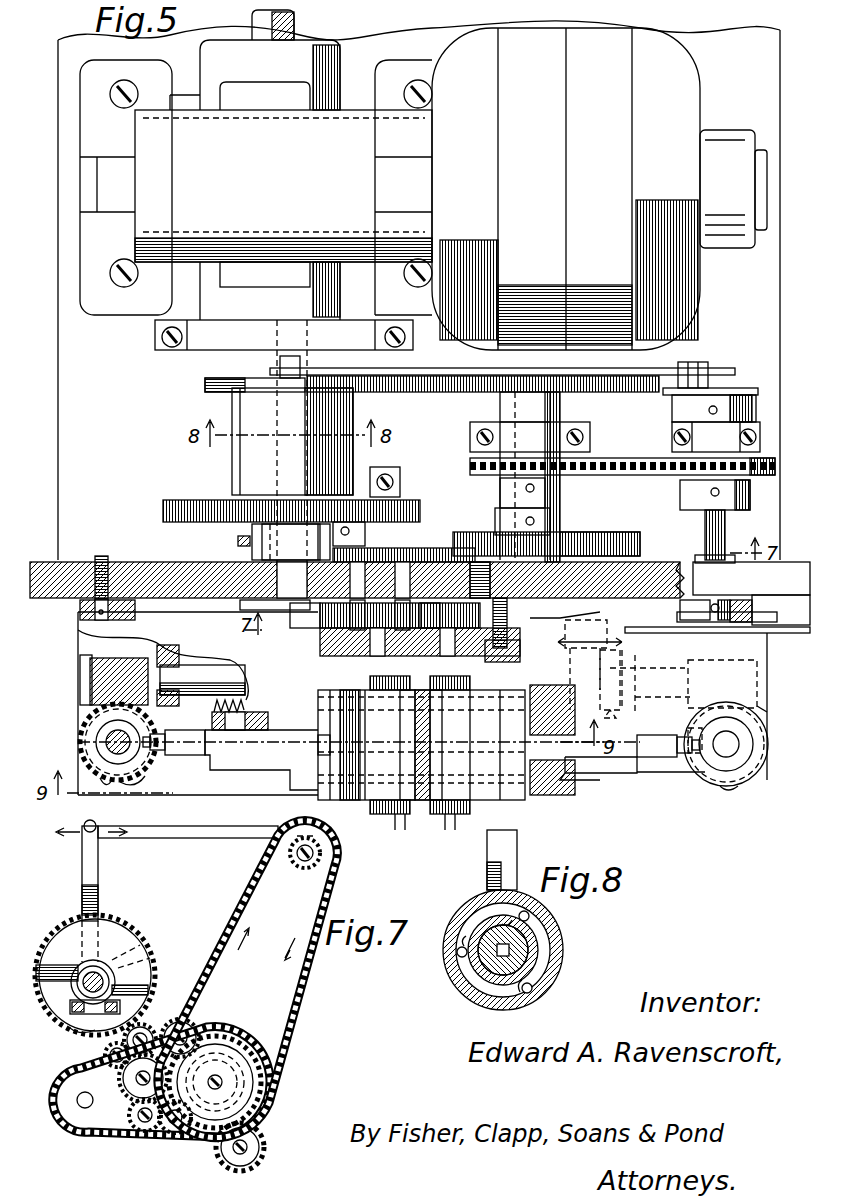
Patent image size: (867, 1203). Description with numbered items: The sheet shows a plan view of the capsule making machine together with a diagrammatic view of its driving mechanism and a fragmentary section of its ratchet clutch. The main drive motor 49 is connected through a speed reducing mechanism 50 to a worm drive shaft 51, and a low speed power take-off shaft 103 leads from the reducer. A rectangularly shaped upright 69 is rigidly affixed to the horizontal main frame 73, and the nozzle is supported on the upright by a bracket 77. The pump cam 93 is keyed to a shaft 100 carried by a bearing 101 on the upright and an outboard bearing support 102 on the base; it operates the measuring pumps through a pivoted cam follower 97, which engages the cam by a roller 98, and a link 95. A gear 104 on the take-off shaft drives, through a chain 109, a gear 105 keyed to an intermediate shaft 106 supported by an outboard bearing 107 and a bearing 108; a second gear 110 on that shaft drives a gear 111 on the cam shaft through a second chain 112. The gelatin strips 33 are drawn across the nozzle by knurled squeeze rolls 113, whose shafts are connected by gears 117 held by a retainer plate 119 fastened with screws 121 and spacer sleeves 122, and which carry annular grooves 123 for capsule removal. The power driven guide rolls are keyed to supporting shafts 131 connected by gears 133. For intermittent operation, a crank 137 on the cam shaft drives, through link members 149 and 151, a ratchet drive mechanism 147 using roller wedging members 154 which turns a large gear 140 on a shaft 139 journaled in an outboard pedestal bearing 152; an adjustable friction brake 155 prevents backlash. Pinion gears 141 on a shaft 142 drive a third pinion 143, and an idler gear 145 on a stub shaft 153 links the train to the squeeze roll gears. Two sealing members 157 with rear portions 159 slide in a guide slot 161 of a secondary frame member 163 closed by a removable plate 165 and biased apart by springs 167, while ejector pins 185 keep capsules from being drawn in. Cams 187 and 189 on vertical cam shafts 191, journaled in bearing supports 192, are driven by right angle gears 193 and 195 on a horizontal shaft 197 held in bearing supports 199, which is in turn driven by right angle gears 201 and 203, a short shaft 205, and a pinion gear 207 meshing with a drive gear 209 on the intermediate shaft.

In FIG. 5, the gelatin strips 33 is at (433, 825).
In FIG. 5, the main drive motor 49 is at (524, 45).
In FIG. 5, the speed reducing mechanism 50 is at (300, 182).
In FIG. 5, the worm drive shaft 51 is at (297, 28).
In FIG. 5, the upright 69 is at (147, 562).
In FIG. 5, the main frame 73 is at (58, 382).
In FIG. 5, the bracket 77 is at (436, 722).
In FIG. 5, the pump cam 93 is at (684, 614).
In FIG. 5, the link 95 is at (678, 634).
In FIG. 5, the cam follower 97 is at (790, 607).
In FIG. 5, the roller 98 is at (760, 596).
In FIG. 5, the pump cam shaft 100 is at (723, 531).
In FIG. 7, the pump cam shaft 100 is at (322, 853).
In FIG. 5, the bearing 101 is at (700, 562).
In FIG. 5, the outboard bearing support 102 is at (760, 436).
In FIG. 5, the power take-off shaft 103 is at (272, 364).
In FIG. 7, the power take-off shaft 103 is at (76, 1106).
In FIG. 5, the gear 104 is at (216, 380).
In FIG. 7, the gear 104 is at (58, 1101).
In FIG. 5, the gear 105 is at (426, 394).
In FIG. 7, the gear 105 is at (261, 1064).
In FIG. 5, the intermediate shaft 106 is at (500, 409).
In FIG. 7, the intermediate shaft 106 is at (222, 1086).
In FIG. 5, the outboard bearing 107 is at (470, 439).
In FIG. 5, the bearing 108 is at (565, 607).
In FIG. 5, the chain 109 is at (440, 392).
In FIG. 7, the chain 109 is at (175, 1136).
In FIG. 5, the second gear 110 is at (496, 473).
In FIG. 7, the second gear 110 is at (260, 1056).
In FIG. 5, the gear 111 is at (776, 470).
In FIG. 7, the gear 111 is at (300, 882).
In FIG. 5, the second chain 112 is at (623, 472).
In FIG. 7, the second chain 112 is at (230, 993).
In FIG. 5, the squeeze rolls 113 is at (370, 685).
In FIG. 5, the gears 117 is at (434, 615).
In FIG. 7, the gears 117 is at (150, 1135).
In FIG. 5, the retainer plate 119 is at (322, 648).
In FIG. 5, the screws 121 is at (502, 657).
In FIG. 5, the spacer sleeves 122 is at (514, 623).
In FIG. 5, the annular grooves 123 is at (400, 725).
In FIG. 5, the supporting shafts 131 is at (362, 662).
In FIG. 7, the supporting shafts 131 is at (140, 1026).
In FIG. 5, the gears 133 is at (440, 556).
In FIG. 7, the gears 133 is at (158, 1019).
In FIG. 5, the crank 137 is at (708, 380).
In FIG. 7, the crank 137 is at (325, 838).
In FIG. 5, the rotatable shaft 139 is at (284, 358).
In FIG. 7, the rotatable shaft 139 is at (80, 975).
In FIG. 8, the rotatable shaft 139 is at (555, 940).
In FIG. 5, the large gear 140 is at (182, 523).
In FIG. 7, the large gear 140 is at (126, 922).
In FIG. 5, the pinion gears 141 is at (366, 536).
In FIG. 7, the pinion gears 141 is at (98, 1058).
In FIG. 5, the rotatable shaft 142 is at (307, 599).
In FIG. 7, the rotatable shaft 142 is at (108, 1059).
In FIG. 5, the third pinion 143 is at (406, 579).
In FIG. 7, the third pinion 143 is at (134, 1034).
In FIG. 5, the idler gear 145 is at (262, 602).
In FIG. 7, the idler gear 145 is at (121, 1084).
In FIG. 5, the ratchet drive mechanism 147 is at (236, 492).
In FIG. 7, the ratchet drive mechanism 147 is at (136, 962).
In FIG. 8, the ratchet drive mechanism 147 is at (604, 973).
In FIG. 5, the link member 149 is at (284, 399).
In FIG. 7, the link member 149 is at (99, 872).
In FIG. 8, the link member 149 is at (487, 865).
In FIG. 5, the link member 151 is at (466, 372).
In FIG. 5, the outboard pedestal bearing 152 is at (325, 314).
In FIG. 7, the stub shaft 153 is at (88, 1106).
In FIG. 8, the roller wedging members 154 is at (542, 910).
In FIG. 5, the adjustable friction brake 155 is at (266, 536).
In FIG. 7, the adjustable friction brake 155 is at (120, 974).
In FIG. 5, the sealing members 157 is at (331, 800).
In FIG. 5, the rear portion 159 is at (190, 760).
In FIG. 5, the guide slot 161 is at (584, 797).
In FIG. 5, the secondary frame member 163 is at (86, 624).
In FIG. 5, the removable plate 165 is at (237, 771).
In FIG. 5, the springs 167 is at (233, 704).
In FIG. 5, the ejector pin 185 is at (308, 795).
In FIG. 5, the cams 187 is at (80, 750).
In FIG. 5, the cams 189 is at (108, 778).
In FIG. 5, the vertical cam shafts 191 is at (106, 737).
In FIG. 5, the bearing supports 192 is at (78, 683).
In FIG. 5, the right angle gear 193 is at (142, 772).
In FIG. 5, the right angle gear 195 is at (90, 658).
In FIG. 5, the horizontal shaft 197 is at (205, 670).
In FIG. 5, the bearing supports 199 is at (172, 646).
In FIG. 5, the right angle gear 201 is at (614, 677).
In FIG. 5, the right angle gear 203 is at (592, 650).
In FIG. 5, the short shaft 205 is at (596, 580).
In FIG. 7, the short shaft 205 is at (248, 1142).
In FIG. 5, the pinion gear 207 is at (633, 535).
In FIG. 7, the pinion gear 207 is at (262, 1153).
In FIG. 5, the drive gear 209 is at (500, 534).
In FIG. 7, the drive gear 209 is at (259, 1083).